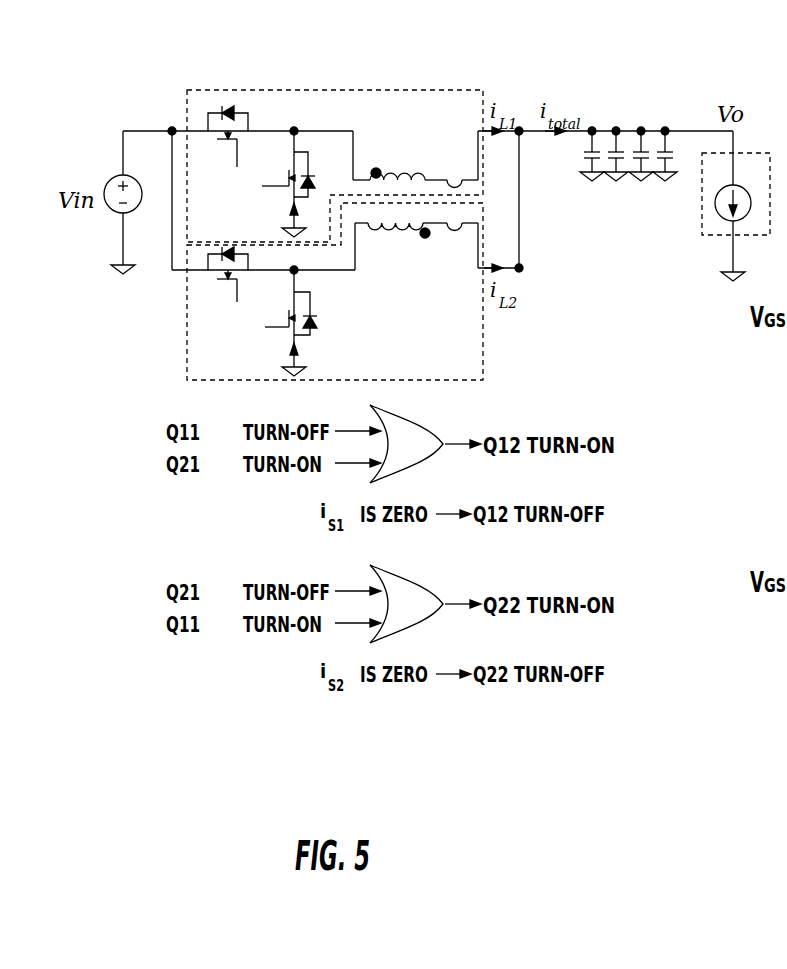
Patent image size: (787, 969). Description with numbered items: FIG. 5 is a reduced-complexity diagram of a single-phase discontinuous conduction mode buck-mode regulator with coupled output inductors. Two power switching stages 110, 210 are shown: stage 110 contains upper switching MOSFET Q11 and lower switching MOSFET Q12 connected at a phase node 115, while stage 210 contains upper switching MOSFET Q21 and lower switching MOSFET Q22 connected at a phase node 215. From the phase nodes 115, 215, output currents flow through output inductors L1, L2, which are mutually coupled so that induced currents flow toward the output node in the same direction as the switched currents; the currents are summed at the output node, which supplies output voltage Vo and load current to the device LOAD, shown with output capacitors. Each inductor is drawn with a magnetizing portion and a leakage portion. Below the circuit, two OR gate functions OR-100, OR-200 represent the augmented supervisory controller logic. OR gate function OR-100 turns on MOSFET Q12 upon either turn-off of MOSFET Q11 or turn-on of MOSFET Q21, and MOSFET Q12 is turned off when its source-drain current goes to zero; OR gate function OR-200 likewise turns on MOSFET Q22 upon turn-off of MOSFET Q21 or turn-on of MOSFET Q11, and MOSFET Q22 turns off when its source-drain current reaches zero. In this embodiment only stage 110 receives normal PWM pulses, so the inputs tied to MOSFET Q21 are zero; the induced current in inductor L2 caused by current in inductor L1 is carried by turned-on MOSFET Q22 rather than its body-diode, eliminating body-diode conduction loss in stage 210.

The power switching stage 110 is at (342, 90).
The phase node 115 is at (294, 145).
The power switching stage 210 is at (485, 353).
The phase node 215 is at (299, 308).
The OR gate function OR-100 is at (413, 423).
The OR gate function OR-200 is at (413, 583).
The upper switching MOSFET Q11 is at (221, 136).
The lower switching MOSFET Q12 is at (276, 168).
The upper switching MOSFET Q21 is at (221, 276).
The lower switching MOSFET Q22 is at (309, 259).
The output inductor L1 is at (430, 155).
The output inductor L2 is at (426, 270).
The load device LOAD is at (702, 225).